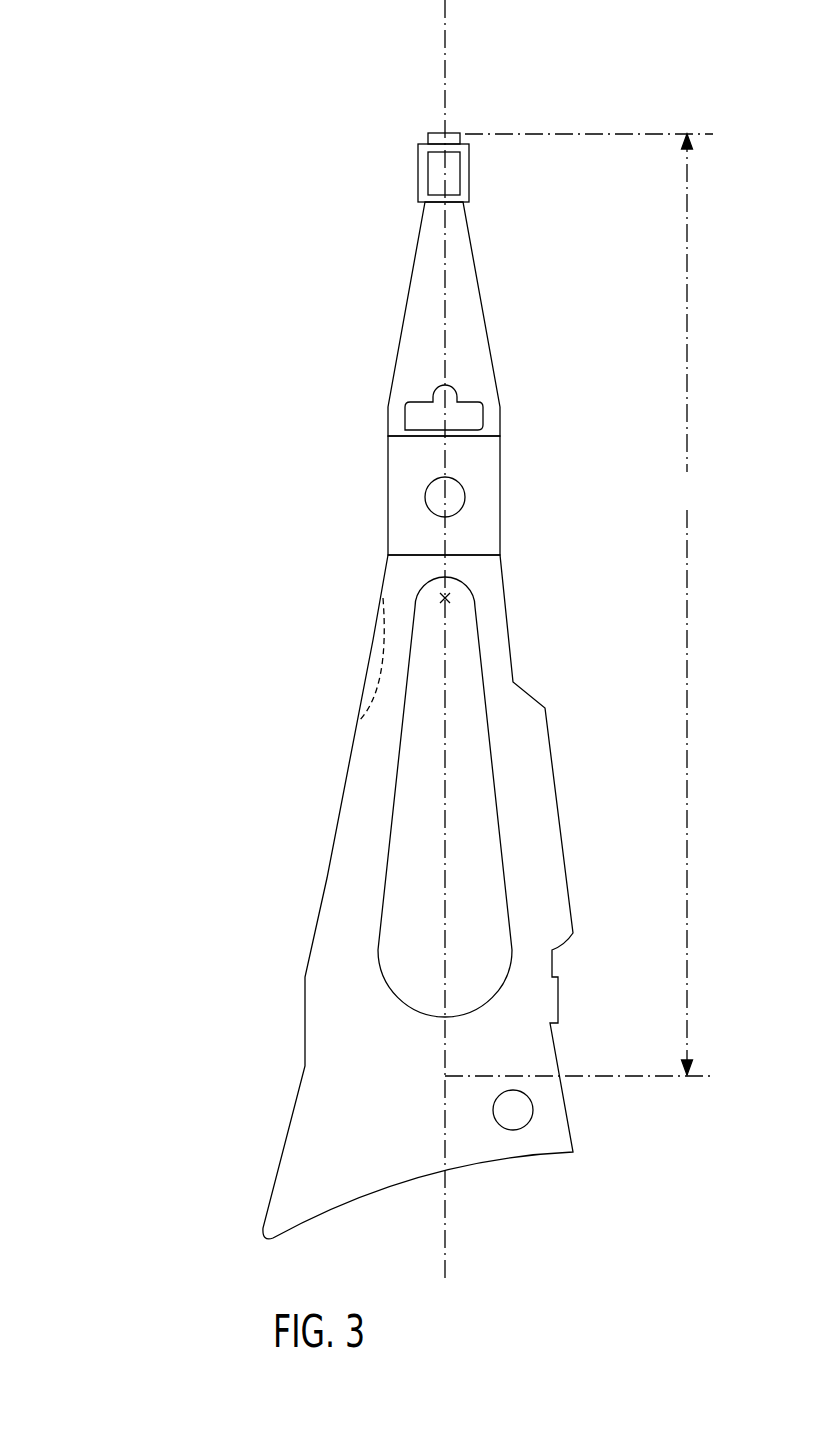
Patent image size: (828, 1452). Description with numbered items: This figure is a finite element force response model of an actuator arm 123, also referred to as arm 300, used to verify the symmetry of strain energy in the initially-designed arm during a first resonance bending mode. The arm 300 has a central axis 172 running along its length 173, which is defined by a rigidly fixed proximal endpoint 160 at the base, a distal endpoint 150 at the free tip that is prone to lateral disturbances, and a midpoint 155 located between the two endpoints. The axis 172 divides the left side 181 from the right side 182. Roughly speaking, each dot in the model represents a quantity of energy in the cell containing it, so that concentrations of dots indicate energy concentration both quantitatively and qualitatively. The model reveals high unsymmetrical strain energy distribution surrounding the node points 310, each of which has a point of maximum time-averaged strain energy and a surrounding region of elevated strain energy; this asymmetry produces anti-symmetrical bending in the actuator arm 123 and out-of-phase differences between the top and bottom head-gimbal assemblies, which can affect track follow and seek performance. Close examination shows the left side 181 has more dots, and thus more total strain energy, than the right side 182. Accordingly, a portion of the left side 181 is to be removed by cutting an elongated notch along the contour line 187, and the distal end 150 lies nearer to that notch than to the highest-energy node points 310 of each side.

The arm 300 is at (205, 280).
The central axis 172 is at (440, 78).
The distal endpoint 150 is at (459, 120).
The right side 182 is at (462, 290).
The left side 181 is at (428, 328).
The actuator arm 123 is at (502, 500).
The midpoint 155 is at (470, 605).
The contour line 187 is at (370, 700).
The node points 310 is at (494, 940).
The proximal endpoint 160 is at (430, 1093).
The length 173 is at (589, 604).